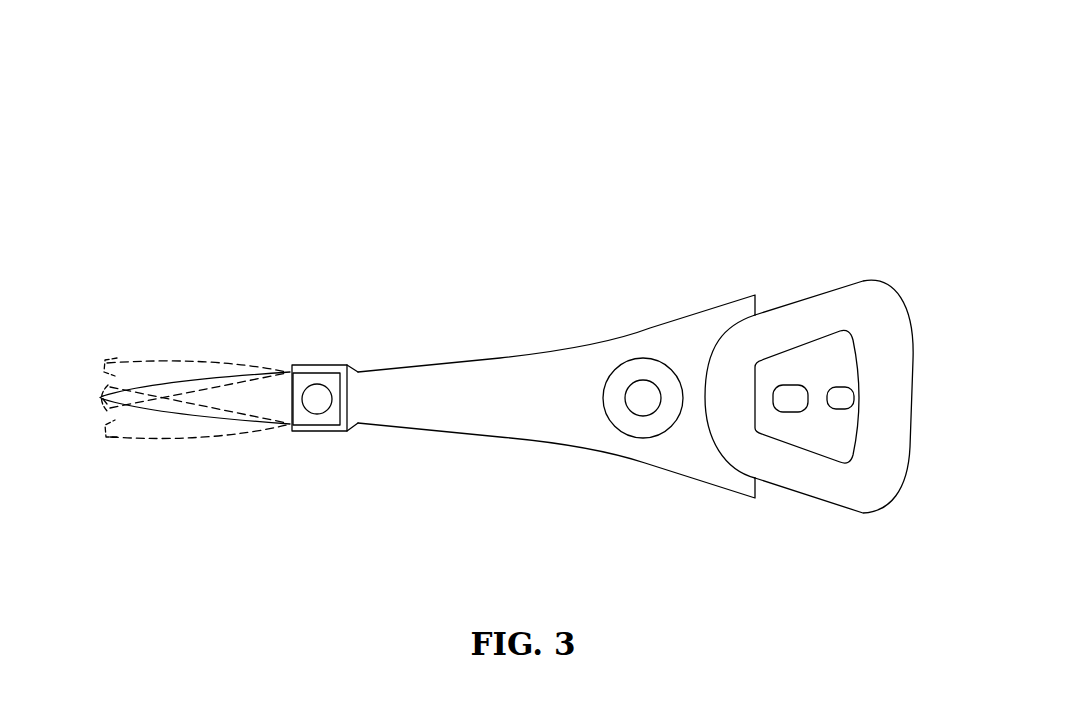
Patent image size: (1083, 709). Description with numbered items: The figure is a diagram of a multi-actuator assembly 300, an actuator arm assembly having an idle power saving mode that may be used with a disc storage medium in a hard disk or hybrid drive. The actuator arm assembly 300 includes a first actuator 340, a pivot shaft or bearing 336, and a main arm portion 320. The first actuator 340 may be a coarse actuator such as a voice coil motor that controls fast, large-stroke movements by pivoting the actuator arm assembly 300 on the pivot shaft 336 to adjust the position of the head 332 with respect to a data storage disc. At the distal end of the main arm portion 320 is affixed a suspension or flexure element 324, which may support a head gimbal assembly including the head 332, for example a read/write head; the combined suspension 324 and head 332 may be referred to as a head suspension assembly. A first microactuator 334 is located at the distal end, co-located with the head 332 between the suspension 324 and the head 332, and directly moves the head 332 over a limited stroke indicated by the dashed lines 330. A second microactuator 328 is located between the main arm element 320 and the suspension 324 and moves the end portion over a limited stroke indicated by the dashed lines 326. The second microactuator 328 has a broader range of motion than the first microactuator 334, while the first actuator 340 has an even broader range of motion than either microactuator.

The multi-actuator assembly 300 is at (82, 33).
The main arm portion 320 is at (503, 357).
The suspension or flexure element 324 is at (186, 433).
The dashed lines 326 is at (209, 348).
The second microactuator 328 is at (286, 355).
The dashed lines 330 is at (86, 419).
The head 332 is at (84, 385).
The first microactuator 334 is at (118, 371).
The pivot shaft or bearing 336 is at (642, 358).
The first actuator 340 is at (863, 280).